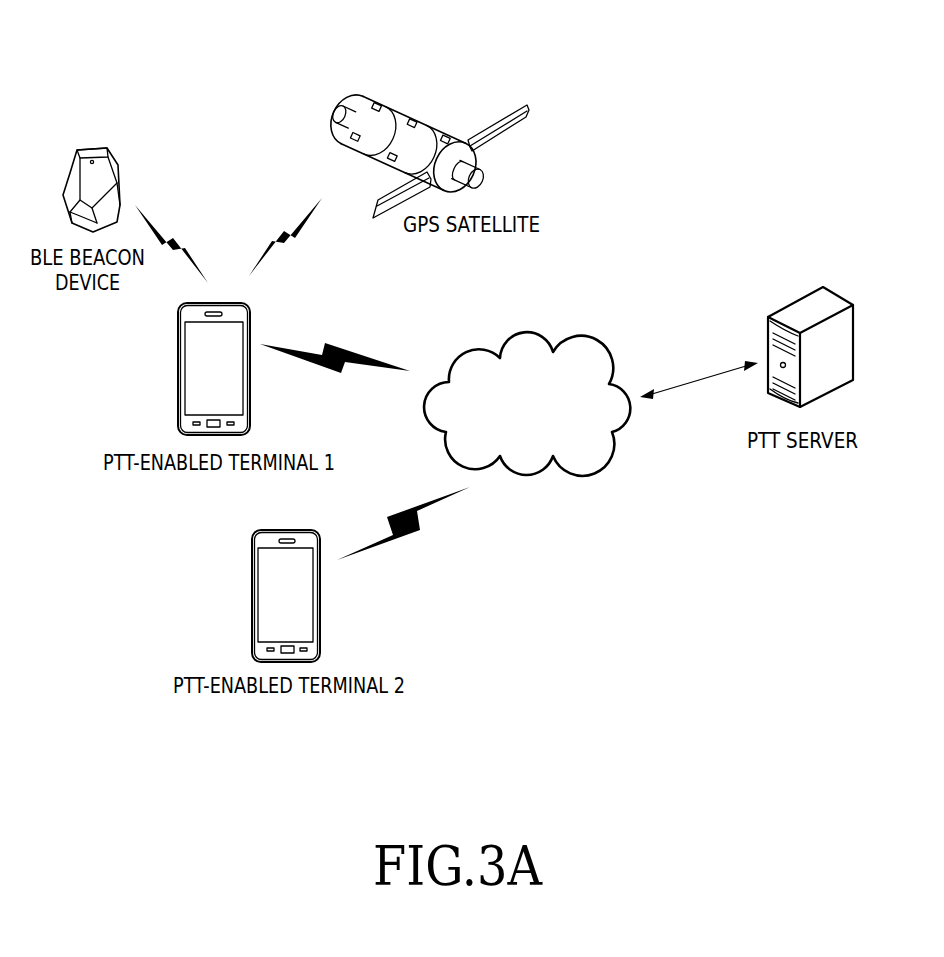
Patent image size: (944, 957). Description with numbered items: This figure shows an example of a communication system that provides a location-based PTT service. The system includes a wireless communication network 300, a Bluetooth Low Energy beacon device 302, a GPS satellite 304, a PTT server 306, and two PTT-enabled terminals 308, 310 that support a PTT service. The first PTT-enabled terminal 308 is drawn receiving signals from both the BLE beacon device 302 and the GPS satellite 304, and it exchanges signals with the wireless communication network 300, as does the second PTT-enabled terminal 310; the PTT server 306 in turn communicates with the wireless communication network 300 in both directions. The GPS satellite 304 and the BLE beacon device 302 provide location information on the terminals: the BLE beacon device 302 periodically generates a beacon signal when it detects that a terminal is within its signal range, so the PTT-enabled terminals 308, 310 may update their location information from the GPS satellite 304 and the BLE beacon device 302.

The wireless communication network 300 is at (527, 329).
The Bluetooth Low Energy (BLE) beacon device 302 is at (90, 148).
The Global Positioning System (GPS) satellite 304 is at (419, 115).
The PTT server 306 is at (842, 294).
The PTT-enabled terminal 1 308 is at (178, 372).
The PTT-enabled terminal 2 310 is at (252, 596).